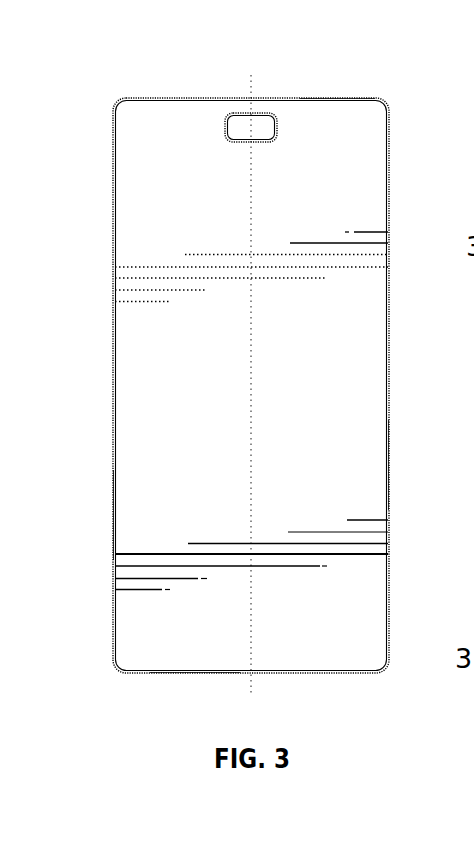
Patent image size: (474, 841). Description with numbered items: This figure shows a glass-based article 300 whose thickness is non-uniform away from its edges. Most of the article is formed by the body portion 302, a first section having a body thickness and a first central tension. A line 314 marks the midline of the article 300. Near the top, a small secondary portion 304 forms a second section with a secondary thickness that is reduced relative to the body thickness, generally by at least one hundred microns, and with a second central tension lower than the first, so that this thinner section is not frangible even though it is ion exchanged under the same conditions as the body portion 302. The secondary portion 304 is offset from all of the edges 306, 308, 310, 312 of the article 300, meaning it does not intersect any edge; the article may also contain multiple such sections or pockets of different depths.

The glass-based article 300 is at (170, 55).
The body portion 302 is at (146, 348).
The secondary portion 304 is at (260, 126).
The edge 306 is at (114, 515).
The edge 308 is at (389, 466).
The edge 310 is at (338, 112).
The edge 312 is at (181, 674).
The midline 314 is at (250, 218).